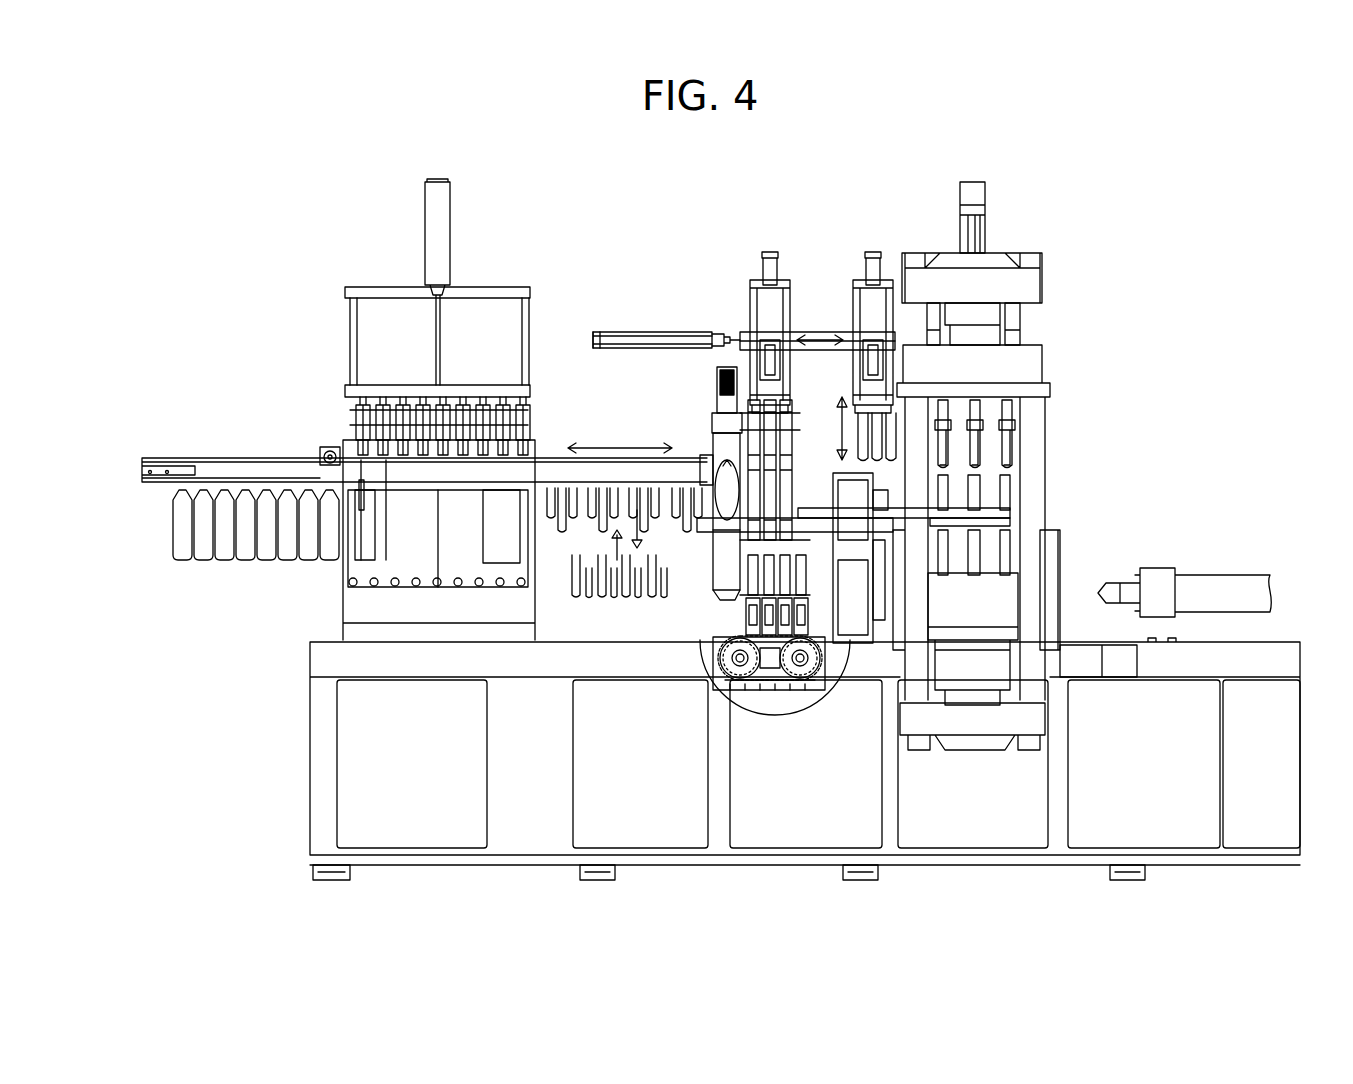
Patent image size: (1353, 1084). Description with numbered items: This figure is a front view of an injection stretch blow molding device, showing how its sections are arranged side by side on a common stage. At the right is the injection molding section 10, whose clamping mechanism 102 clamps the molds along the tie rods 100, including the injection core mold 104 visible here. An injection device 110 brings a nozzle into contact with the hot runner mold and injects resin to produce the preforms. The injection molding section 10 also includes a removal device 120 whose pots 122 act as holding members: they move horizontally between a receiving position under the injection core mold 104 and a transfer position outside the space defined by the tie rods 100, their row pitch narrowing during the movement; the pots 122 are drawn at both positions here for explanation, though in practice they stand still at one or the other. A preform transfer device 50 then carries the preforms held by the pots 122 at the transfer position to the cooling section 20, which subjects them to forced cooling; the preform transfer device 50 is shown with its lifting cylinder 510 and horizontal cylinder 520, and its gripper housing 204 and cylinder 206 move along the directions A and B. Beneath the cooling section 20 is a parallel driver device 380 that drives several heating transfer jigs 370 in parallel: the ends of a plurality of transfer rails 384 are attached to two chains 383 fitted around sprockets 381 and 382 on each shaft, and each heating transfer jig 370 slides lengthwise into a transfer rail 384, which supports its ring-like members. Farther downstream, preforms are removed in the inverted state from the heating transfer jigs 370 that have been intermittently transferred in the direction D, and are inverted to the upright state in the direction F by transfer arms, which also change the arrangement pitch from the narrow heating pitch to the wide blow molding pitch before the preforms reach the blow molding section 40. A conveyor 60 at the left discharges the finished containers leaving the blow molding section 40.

The injection molding section 10 is at (1025, 466).
The cooling section 20 is at (800, 440).
The blow molding section 40 is at (333, 420).
The preform transfer device 50 is at (820, 285).
The conveyor 60 is at (165, 450).
The tie rods 100 is at (1032, 425).
The clamping mechanism 102 is at (975, 718).
The injection core mold 104 is at (1008, 448).
The injection device 110 is at (1208, 585).
The removal device 120 is at (1012, 512).
The pots 122 is at (1008, 487).
The gripper housing 204 is at (712, 445).
The lifting cylinder 206 is at (715, 390).
The heating transfer jig 370 is at (745, 600).
The parallel driver device 380 is at (728, 714).
The sprocket 381 is at (725, 672).
The sprocket 382 is at (805, 685).
The chains 383 is at (740, 690).
The transfer rails 384 is at (710, 645).
The lifting cylinder 510 is at (866, 268).
The horizontal moving cylinder 520 is at (648, 340).
The vertical movement direction A is at (831, 428).
The horizontal movement direction B is at (820, 324).
The direction D is at (600, 542).
The direction F is at (648, 540).